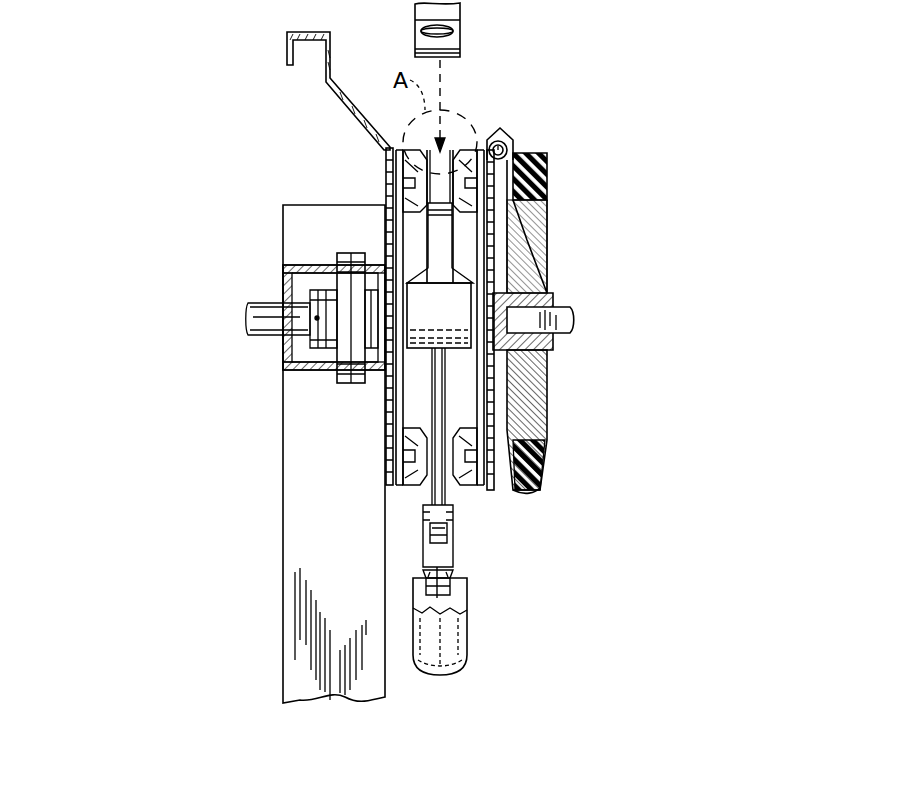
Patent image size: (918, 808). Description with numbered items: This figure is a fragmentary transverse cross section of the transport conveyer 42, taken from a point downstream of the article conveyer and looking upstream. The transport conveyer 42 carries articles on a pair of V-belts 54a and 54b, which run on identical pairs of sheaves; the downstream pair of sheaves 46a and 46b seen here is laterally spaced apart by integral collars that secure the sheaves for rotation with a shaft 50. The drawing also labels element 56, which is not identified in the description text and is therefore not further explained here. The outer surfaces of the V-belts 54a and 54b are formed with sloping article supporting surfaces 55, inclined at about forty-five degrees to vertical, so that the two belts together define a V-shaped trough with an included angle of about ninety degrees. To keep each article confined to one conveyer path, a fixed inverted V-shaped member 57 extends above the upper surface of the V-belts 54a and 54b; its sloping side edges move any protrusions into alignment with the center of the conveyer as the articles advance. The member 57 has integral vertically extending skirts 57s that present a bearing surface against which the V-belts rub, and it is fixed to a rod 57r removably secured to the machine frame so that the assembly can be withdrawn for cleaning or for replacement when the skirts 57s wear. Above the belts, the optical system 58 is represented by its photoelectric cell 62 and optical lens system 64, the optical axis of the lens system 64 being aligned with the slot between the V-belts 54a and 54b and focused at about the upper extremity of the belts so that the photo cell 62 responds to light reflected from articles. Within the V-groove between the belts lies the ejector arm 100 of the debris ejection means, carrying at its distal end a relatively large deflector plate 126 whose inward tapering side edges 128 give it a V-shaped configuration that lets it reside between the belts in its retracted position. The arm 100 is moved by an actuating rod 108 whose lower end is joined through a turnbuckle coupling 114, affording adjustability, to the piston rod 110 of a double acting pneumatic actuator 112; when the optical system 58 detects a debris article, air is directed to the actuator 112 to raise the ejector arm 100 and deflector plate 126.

The transport conveyer 42 is at (518, 88).
The downstream sheave 46a is at (386, 163).
The downstream sheave 46b is at (494, 392).
The shaft 50 is at (572, 319).
The V-belt 54a is at (540, 181).
The V-belt 54b is at (467, 232).
The sloping article supporting surface 55 is at (460, 410).
The bushing collar 56 is at (412, 186).
The inverted V-shaped member 57 is at (497, 135).
The rod 57r is at (508, 142).
The skirt 57s is at (507, 150).
The optical system 58 is at (407, 19).
The photoelectric cell 62 is at (460, 11).
The optical lens system 64 is at (445, 36).
The ejector arm 100 is at (553, 253).
The actuating rod 108 is at (432, 494).
The piston rod 110 is at (455, 580).
The double acting pneumatic actuator 112 is at (460, 634).
The turnbuckle coupling 114 is at (450, 567).
The deflector plate 126 is at (415, 350).
The inward tapering side edge 128 is at (422, 285).